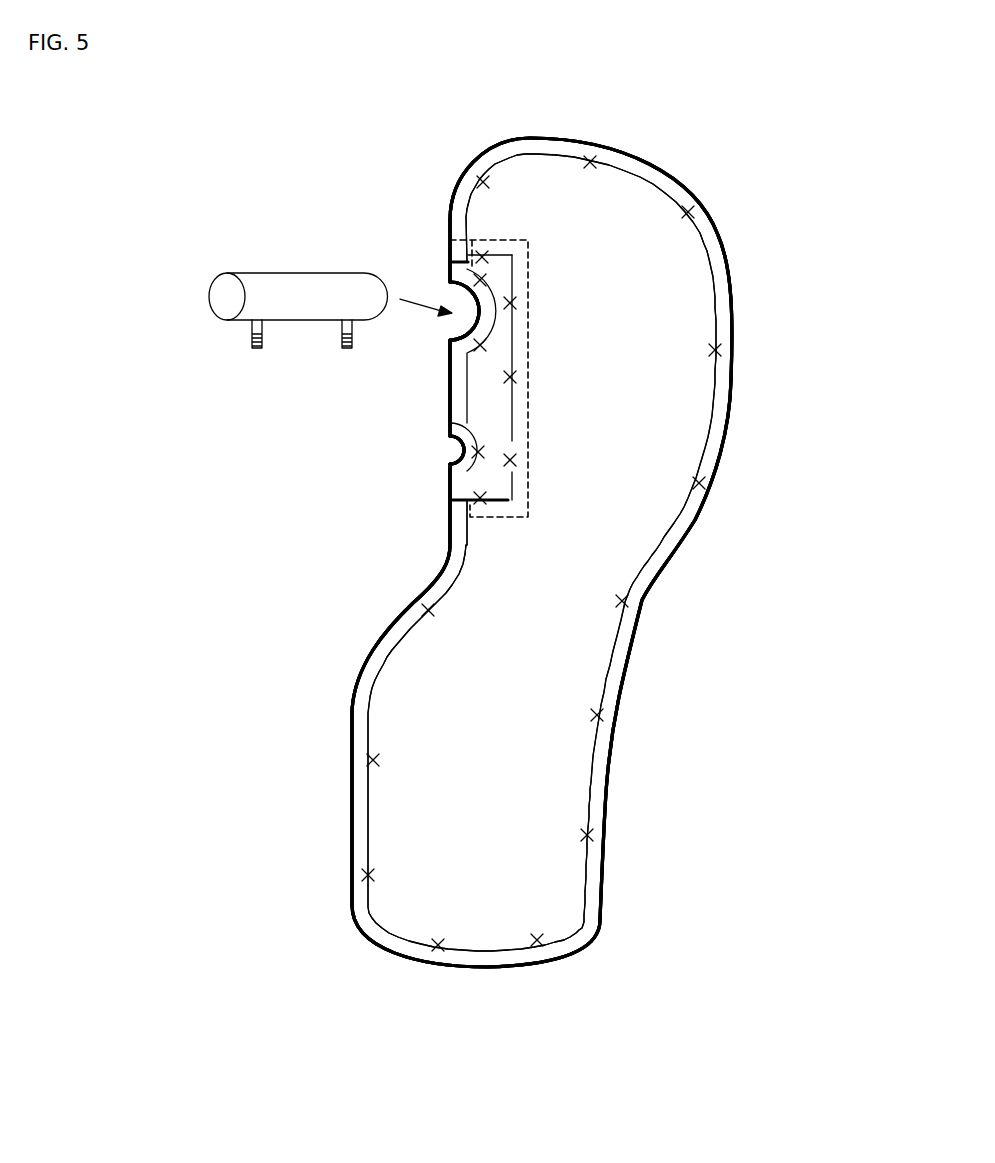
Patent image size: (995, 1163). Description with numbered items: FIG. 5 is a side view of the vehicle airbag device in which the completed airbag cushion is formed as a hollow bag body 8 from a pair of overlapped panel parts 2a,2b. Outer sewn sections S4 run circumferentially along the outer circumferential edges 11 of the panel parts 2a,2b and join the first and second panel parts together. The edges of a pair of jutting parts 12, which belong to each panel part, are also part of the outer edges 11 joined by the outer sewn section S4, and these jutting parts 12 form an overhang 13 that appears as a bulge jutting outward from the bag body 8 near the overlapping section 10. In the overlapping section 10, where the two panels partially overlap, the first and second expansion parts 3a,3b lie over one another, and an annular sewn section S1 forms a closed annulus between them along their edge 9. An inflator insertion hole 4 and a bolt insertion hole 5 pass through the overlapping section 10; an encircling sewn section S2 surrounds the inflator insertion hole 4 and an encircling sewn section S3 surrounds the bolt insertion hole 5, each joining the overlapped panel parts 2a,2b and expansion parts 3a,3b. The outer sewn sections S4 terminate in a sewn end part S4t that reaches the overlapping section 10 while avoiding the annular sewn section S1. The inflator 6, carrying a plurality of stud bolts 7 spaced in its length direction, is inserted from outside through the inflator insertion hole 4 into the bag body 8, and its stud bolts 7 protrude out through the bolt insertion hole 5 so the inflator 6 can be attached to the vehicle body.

The panel parts 2a,2b is at (577, 797).
The expansion parts 3a,3b is at (530, 392).
The inflator insertion hole 4 is at (452, 333).
The bolt insertion hole 5 is at (453, 457).
The inflator 6 is at (303, 286).
The stud bolts 7 is at (254, 342).
The bag body 8 is at (740, 262).
The edge 9 is at (473, 260).
The overlapping section 10 is at (533, 297).
The outer circumferential edges 11 is at (723, 409).
The jutting parts 12 is at (363, 658).
The overhang 13 is at (356, 694).
The annular sewn section S1 is at (513, 441).
The encircling sewn section S2 is at (492, 300).
The encircling sewn section S3 is at (462, 473).
The outer sewn sections S4 is at (672, 538).
The sewn end part S4t is at (458, 262).